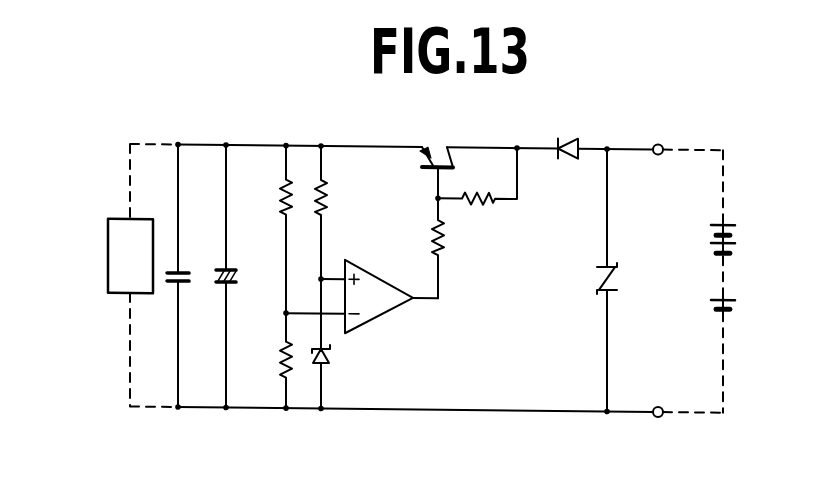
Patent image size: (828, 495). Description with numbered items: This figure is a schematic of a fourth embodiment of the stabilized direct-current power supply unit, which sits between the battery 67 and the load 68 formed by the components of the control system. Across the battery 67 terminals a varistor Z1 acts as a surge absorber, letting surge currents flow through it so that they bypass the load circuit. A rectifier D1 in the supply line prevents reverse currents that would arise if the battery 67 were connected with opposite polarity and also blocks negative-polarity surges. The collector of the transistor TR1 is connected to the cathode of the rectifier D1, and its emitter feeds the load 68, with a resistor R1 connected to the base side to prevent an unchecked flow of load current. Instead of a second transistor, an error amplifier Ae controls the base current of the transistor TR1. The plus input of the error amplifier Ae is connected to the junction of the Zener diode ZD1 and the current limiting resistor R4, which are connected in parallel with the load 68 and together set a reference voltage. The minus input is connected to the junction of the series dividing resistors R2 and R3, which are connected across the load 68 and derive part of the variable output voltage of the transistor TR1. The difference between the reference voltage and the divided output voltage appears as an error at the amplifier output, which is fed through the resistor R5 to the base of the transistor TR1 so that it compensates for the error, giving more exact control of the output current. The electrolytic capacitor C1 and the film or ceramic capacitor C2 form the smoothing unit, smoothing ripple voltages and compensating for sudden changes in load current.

The load 68 is at (108, 244).
The battery 67 is at (737, 236).
The electrolytic capacitor C1 is at (233, 266).
The film or ceramic capacitor C2 is at (182, 266).
The resistor R1 is at (481, 200).
The dividing resistor R2 is at (284, 198).
The dividing resistor R3 is at (283, 356).
The current limiting resistor R4 is at (328, 199).
The resistor R5 is at (444, 243).
The Zener diode ZD1 is at (330, 360).
The error amplifier Ae is at (389, 313).
The transistor TR1 is at (437, 141).
The rectifier D1 is at (572, 135).
The varistor Z1 is at (628, 280).